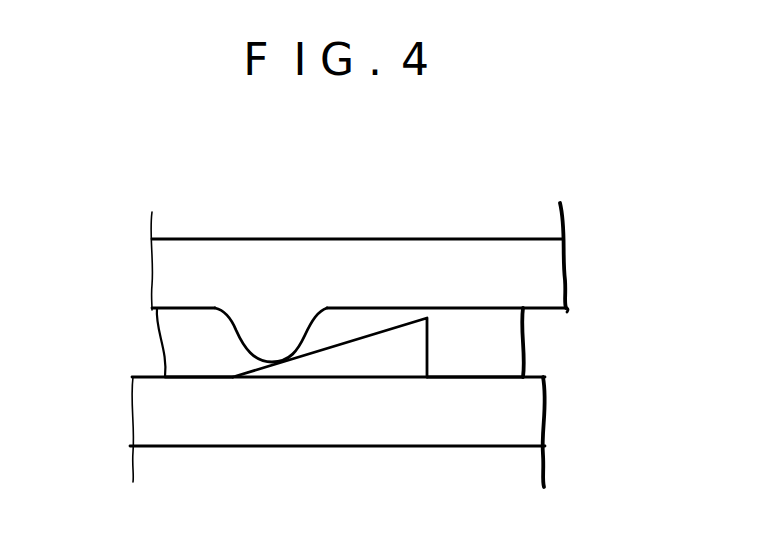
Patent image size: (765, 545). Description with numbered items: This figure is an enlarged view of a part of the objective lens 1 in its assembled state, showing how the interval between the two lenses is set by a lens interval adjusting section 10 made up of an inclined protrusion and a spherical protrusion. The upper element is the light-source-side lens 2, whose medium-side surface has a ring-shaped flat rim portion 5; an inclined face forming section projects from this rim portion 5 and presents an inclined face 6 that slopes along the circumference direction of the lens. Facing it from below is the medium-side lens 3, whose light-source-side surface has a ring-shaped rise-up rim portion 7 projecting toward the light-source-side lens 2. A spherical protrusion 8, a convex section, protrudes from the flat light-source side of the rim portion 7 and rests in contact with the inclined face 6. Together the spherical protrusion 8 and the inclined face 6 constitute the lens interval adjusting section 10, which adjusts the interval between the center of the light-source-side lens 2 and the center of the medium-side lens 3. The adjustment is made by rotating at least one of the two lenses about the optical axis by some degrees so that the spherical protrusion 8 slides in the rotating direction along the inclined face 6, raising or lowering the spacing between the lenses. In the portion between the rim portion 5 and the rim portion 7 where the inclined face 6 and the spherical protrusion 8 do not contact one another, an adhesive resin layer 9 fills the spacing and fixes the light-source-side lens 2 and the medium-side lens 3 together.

The objective lens 1 is at (460, 176).
The light-source-side lens 2 is at (530, 473).
The medium-side lens 3 is at (548, 222).
The rim portion 5 is at (523, 362).
The inclined face 6 is at (403, 323).
The rim portion 7 is at (557, 313).
The spherical protrusion 8 is at (283, 318).
The adhesive resin layer 9 is at (208, 367).
The lens interval adjusting section 10 is at (200, 343).